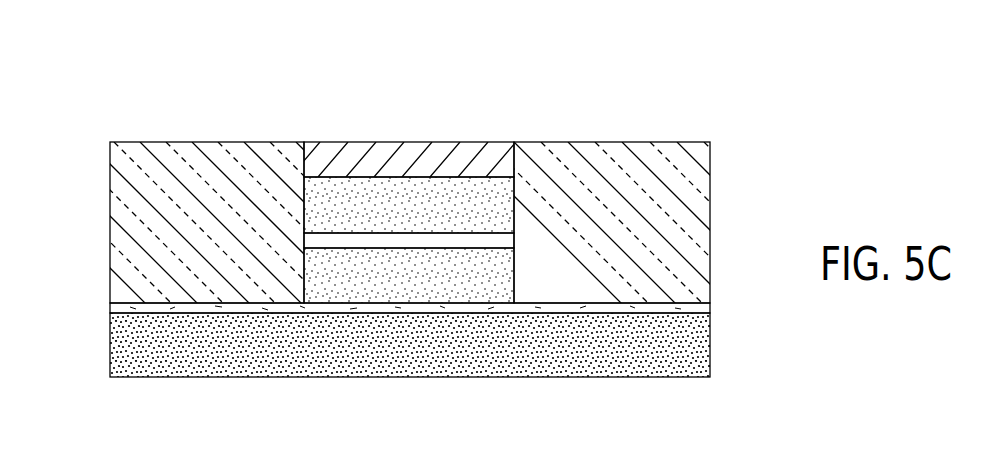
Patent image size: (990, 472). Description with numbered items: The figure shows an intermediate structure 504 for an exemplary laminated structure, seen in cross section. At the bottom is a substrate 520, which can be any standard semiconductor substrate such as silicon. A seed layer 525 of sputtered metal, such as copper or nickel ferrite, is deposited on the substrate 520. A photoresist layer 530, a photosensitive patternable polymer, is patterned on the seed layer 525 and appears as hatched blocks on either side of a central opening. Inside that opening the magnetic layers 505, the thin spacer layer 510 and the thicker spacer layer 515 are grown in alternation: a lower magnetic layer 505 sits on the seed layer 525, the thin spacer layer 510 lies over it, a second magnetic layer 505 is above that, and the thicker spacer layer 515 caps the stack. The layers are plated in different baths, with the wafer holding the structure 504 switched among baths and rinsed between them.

The intermediate structure 504 is at (106, 102).
The magnetic layer 505 is at (514, 200).
The spacer layer 510 is at (514, 241).
The thicker spacer layer 515 is at (405, 152).
The substrate 520 is at (705, 349).
The seed layer 525 is at (110, 308).
The photoresist layer 530 is at (120, 185).